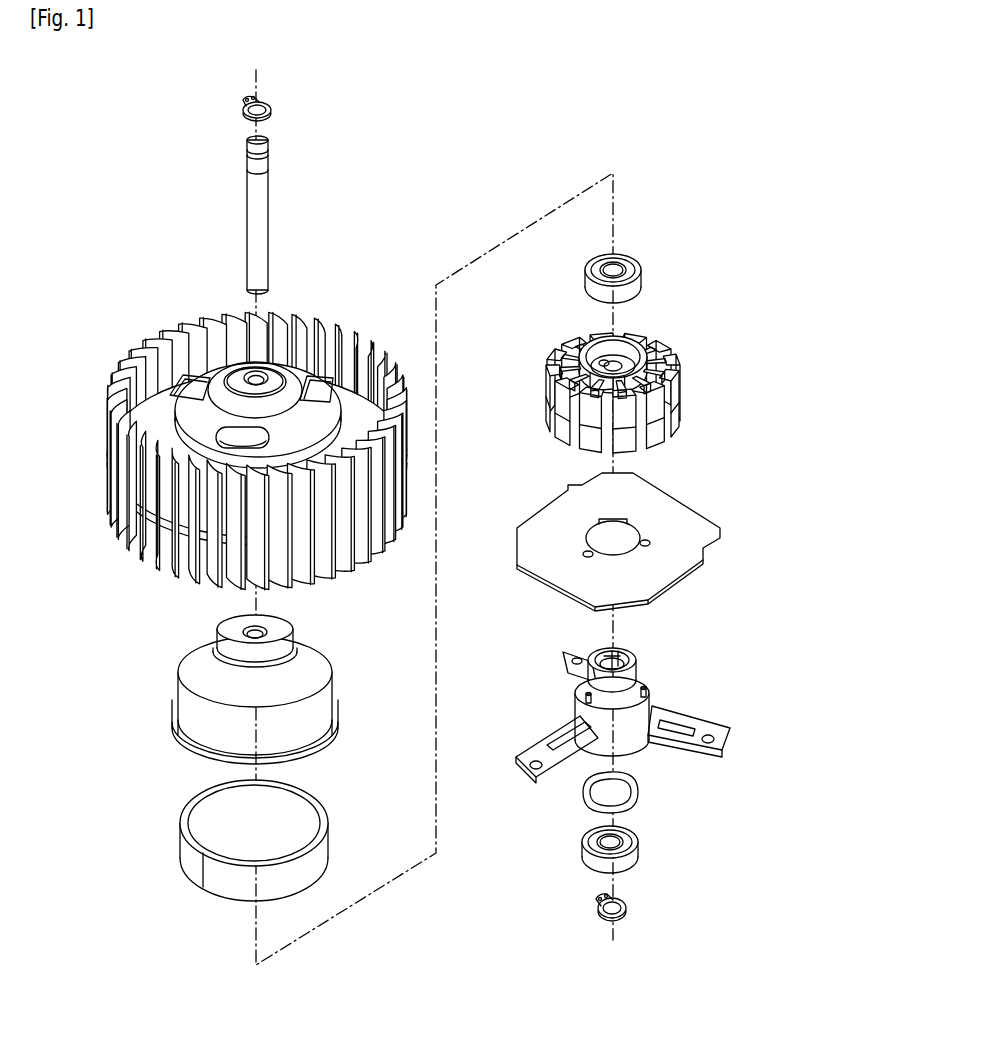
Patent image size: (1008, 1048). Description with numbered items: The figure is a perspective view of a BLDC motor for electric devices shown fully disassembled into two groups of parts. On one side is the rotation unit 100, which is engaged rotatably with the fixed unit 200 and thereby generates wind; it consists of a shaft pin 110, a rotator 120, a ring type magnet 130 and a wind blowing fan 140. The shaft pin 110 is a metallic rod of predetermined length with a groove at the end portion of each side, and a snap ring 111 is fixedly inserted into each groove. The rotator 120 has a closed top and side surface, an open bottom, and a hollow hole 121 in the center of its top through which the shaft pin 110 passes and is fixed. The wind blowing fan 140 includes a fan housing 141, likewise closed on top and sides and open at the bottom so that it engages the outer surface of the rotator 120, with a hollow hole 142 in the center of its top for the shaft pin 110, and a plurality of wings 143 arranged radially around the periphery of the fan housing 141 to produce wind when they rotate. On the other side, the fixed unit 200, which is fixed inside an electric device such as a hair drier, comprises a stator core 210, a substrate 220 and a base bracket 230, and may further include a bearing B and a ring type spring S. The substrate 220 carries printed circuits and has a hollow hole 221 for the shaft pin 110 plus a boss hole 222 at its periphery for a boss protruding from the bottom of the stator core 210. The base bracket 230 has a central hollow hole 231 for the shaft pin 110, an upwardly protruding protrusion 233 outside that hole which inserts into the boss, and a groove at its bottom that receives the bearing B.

The rotation unit 100 is at (91, 905).
The shaft pin 110 is at (250, 200).
The snap ring 111 is at (271, 110).
The rotator 120 is at (190, 662).
The hollow hole 121 is at (264, 630).
The ring type magnet 130 is at (190, 868).
The wind blowing fan 140 is at (319, 302).
The fan housing 141 is at (314, 398).
The hollow hole 142 is at (250, 385).
The wings 143 is at (181, 372).
The fixed unit 200 is at (508, 335).
The stator core 210 is at (692, 379).
The substrate 220 is at (680, 520).
The hollow hole 221 is at (637, 522).
The boss hole 222 is at (593, 554).
The base bracket 230 is at (664, 691).
The hollow hole 231 is at (612, 646).
The protrusion 233 is at (584, 700).
The bearing B is at (626, 257).
The ring type spring S is at (633, 792).